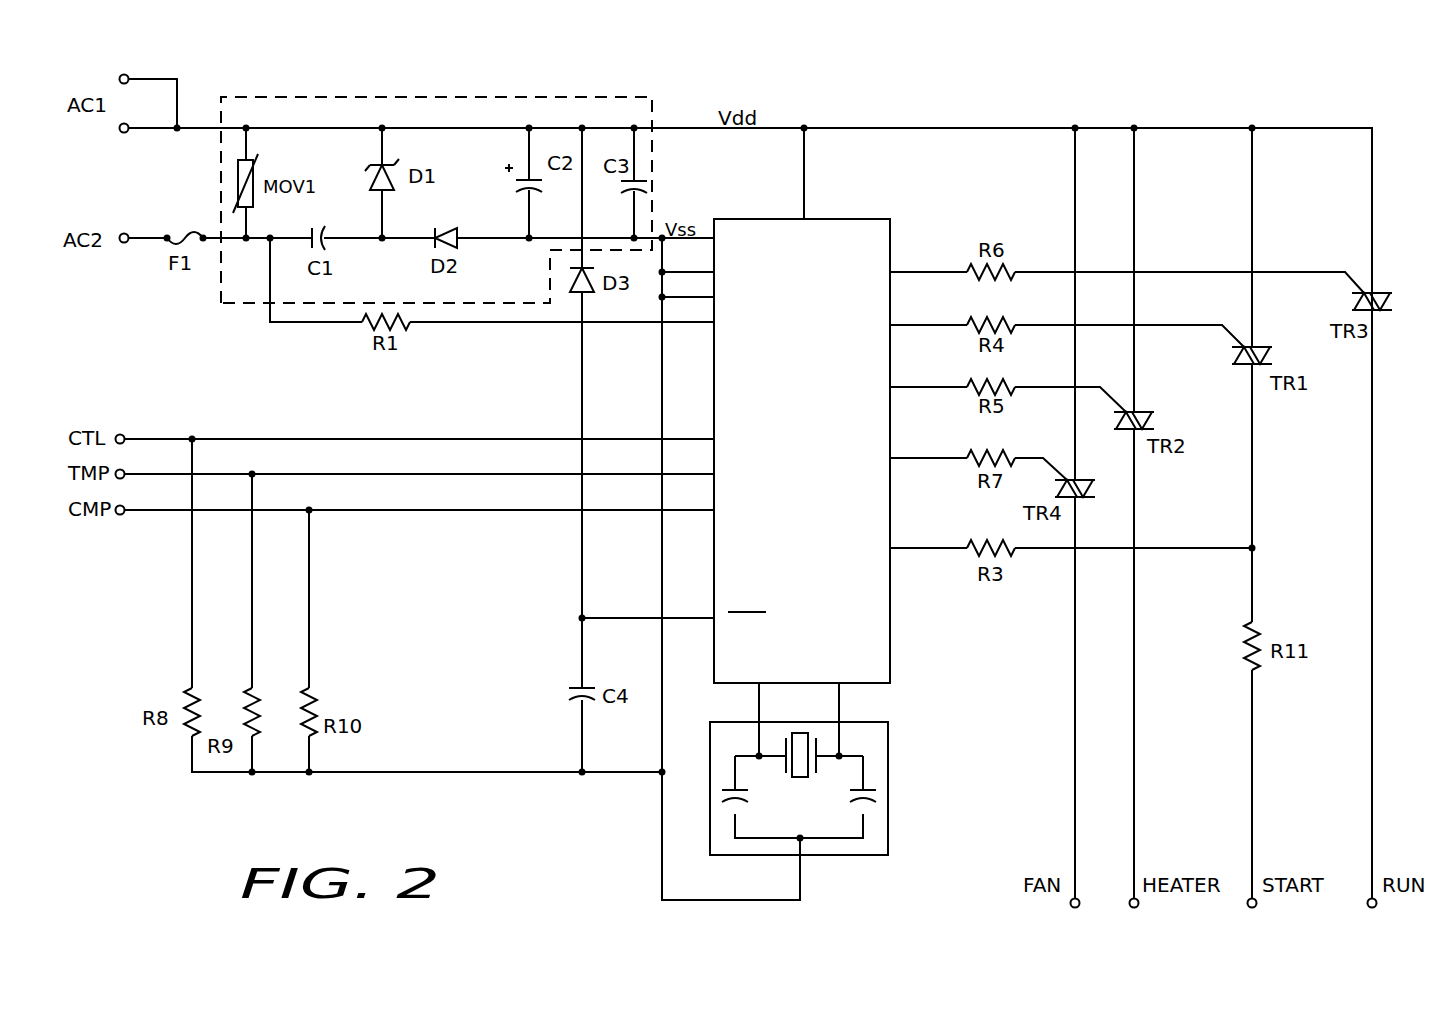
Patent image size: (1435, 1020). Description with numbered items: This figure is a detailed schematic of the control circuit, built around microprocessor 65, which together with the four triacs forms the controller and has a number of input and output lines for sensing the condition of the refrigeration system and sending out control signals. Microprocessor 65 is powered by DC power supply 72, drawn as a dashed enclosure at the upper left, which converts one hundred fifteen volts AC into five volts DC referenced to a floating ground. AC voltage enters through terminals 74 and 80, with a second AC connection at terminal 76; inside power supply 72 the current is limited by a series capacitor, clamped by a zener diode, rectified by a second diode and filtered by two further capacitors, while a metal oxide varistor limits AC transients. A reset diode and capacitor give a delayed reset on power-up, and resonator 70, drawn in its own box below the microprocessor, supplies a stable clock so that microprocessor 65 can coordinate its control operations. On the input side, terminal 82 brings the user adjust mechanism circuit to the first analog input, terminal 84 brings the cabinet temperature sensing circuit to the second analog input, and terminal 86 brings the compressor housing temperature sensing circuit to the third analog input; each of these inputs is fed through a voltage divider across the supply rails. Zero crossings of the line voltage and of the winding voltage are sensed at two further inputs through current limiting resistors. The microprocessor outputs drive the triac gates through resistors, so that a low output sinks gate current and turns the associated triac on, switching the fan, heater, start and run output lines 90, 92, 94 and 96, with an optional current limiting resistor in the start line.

The DC power supply 72 is at (652, 97).
The terminal 74 is at (149, 92).
The AC1 input terminal 76 is at (141, 118).
The terminal 80 is at (144, 227).
The terminal 82 is at (136, 428).
The terminal 84 is at (136, 463).
The terminal 86 is at (136, 499).
The microprocessor 65 is at (818, 578).
The resonator 70 is at (877, 855).
The output line 90 is at (1069, 918).
The output line 92 is at (1129, 918).
The output line 94 is at (1247, 918).
The output line 96 is at (1367, 918).